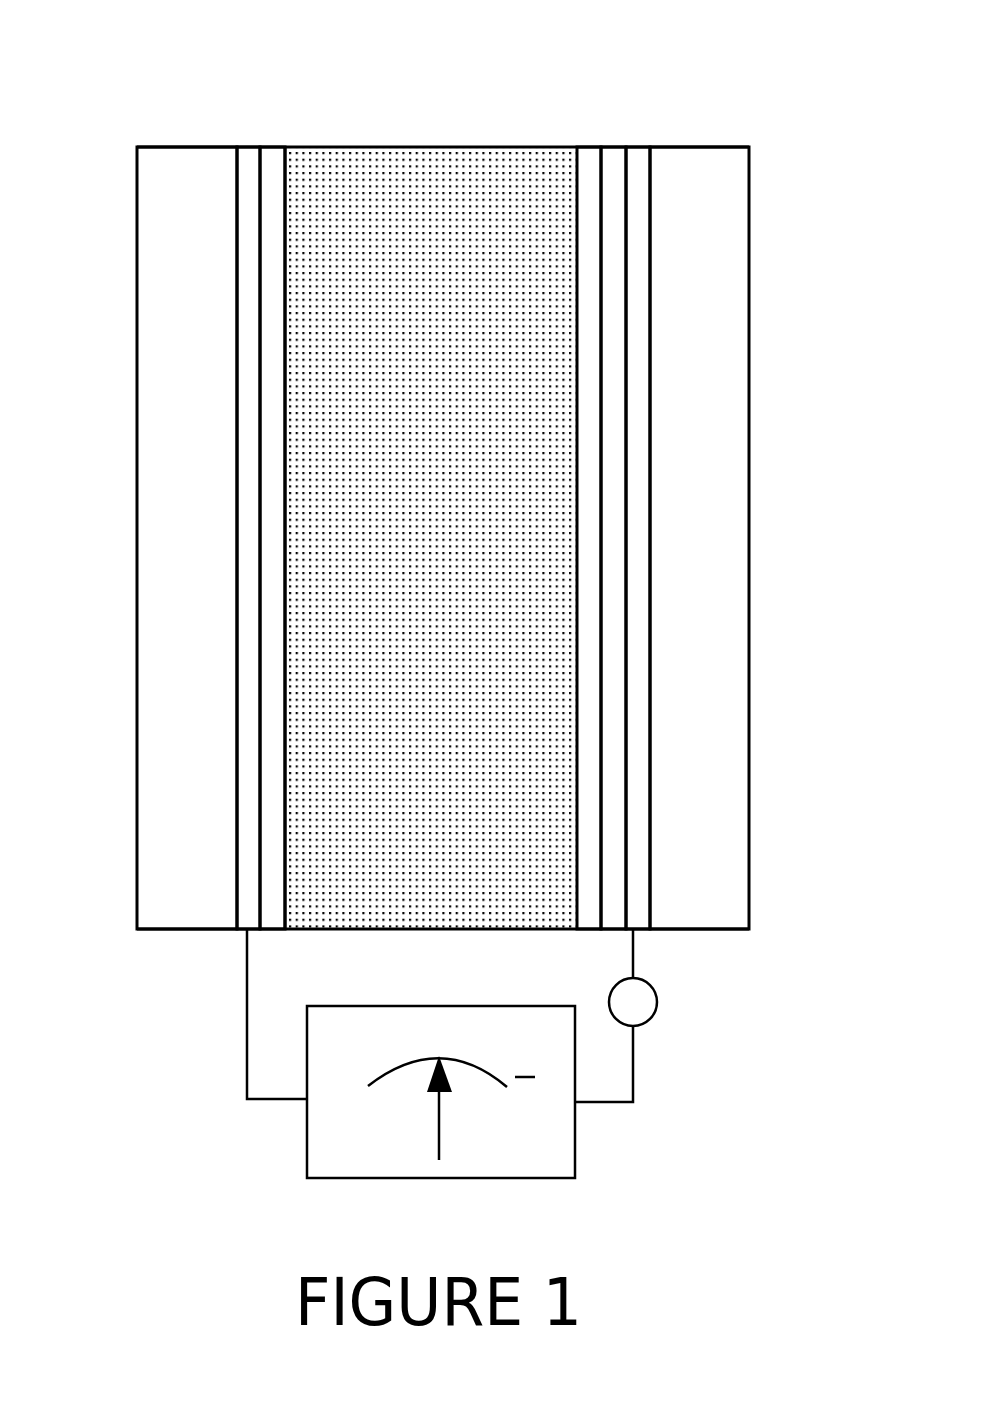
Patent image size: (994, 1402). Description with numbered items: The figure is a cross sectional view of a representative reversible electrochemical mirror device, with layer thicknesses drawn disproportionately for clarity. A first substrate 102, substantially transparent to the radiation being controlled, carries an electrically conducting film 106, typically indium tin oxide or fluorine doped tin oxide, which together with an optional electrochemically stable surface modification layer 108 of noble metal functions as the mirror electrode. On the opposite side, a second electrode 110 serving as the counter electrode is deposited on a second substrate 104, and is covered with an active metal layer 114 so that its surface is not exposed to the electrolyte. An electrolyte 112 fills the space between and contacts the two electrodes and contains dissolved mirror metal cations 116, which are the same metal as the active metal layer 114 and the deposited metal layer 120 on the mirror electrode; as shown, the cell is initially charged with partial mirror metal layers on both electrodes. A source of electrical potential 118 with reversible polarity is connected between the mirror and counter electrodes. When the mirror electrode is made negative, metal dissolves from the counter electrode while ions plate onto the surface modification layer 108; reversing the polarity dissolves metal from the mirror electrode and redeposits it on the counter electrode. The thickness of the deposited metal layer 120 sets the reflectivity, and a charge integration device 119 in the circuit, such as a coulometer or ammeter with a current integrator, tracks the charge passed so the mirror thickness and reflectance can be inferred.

The first substrate 102 is at (712, 293).
The second substrate 104 is at (153, 570).
The electrically conducting film 106 is at (642, 160).
The surface modification layer 108 is at (613, 160).
The second electrode 110 is at (252, 157).
The electrolyte 112 is at (415, 172).
The active metal layer 114 is at (273, 158).
The mirror metal cations 116 is at (347, 215).
The source of electrical potential 118 is at (550, 1150).
The charge integration device 119 is at (657, 1003).
The deposited metal layer 120 is at (588, 160).